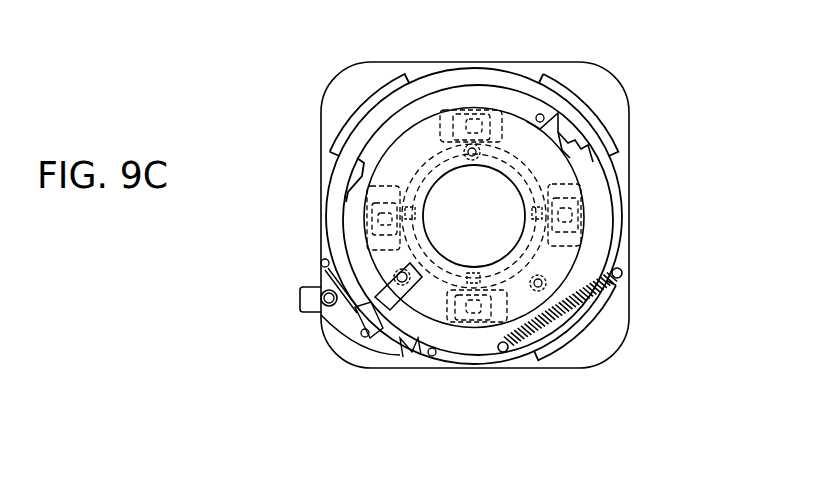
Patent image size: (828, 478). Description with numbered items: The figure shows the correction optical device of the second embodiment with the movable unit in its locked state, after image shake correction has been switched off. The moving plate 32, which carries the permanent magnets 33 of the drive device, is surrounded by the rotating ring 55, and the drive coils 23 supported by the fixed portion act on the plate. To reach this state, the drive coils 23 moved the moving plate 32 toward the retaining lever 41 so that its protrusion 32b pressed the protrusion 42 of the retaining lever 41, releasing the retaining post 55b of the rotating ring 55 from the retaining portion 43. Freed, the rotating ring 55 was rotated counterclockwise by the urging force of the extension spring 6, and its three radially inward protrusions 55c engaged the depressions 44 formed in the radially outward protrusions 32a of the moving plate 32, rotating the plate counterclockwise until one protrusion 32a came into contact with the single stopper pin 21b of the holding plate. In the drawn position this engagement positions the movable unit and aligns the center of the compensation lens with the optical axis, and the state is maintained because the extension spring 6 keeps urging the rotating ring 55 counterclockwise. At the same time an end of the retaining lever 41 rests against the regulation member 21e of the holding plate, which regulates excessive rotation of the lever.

The extension spring 6 is at (606, 301).
The stopper pin 21b is at (539, 112).
The regulation member 21e is at (319, 268).
The drive coil 23 is at (456, 131).
The moving plate 32 is at (402, 162).
The protrusion 32a is at (572, 148).
The protrusion 32b is at (384, 300).
The permanent magnet 33 is at (448, 119).
The retaining lever 41 is at (328, 323).
The protrusion 42 is at (357, 318).
The retaining portion 43 is at (414, 356).
The depression 44 is at (566, 129).
The rotating ring 55 is at (623, 214).
The retaining post 55b is at (435, 356).
The protrusion 55c is at (564, 134).